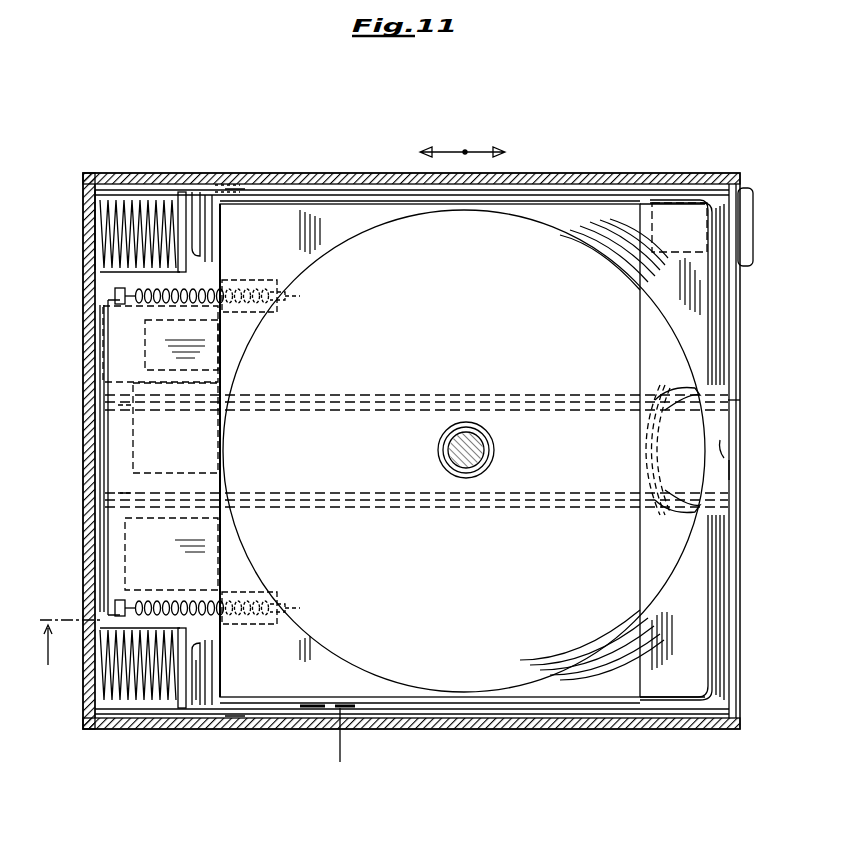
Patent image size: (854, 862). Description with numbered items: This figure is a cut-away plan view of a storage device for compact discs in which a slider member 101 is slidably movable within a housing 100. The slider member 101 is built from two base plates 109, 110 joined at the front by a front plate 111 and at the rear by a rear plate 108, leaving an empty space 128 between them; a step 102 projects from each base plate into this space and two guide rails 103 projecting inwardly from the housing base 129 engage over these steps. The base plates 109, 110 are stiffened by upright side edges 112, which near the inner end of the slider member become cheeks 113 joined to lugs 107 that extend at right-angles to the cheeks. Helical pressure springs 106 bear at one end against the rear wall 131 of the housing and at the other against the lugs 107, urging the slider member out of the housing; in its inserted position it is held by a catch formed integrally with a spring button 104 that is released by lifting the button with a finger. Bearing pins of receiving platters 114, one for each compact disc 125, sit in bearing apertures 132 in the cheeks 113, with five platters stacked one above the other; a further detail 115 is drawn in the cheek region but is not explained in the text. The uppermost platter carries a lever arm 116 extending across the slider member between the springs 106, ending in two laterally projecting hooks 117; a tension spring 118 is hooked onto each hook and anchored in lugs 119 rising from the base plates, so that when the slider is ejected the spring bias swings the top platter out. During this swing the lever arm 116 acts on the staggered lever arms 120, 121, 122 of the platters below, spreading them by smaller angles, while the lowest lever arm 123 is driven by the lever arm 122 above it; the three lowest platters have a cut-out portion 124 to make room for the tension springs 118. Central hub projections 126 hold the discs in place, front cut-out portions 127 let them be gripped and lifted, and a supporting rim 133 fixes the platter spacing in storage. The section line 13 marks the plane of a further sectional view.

The section line 13- 13 is at (196, 677).
The housing 100 is at (280, 183).
The slider member 101 is at (742, 596).
The step 102 is at (712, 408).
The guide rails 103 is at (580, 410).
The spring button 104 is at (745, 232).
The helical pressure springs 106 is at (130, 200).
The lugs 107 is at (186, 258).
The rear plate 108 is at (96, 470).
The base plate 109 is at (190, 200).
The base plate 110 is at (200, 714).
The front plate 111 is at (730, 470).
The upright side edges 112 is at (337, 192).
The cheeks 113 is at (207, 198).
The receiving platters 114 is at (614, 212).
The latch pin 115 is at (218, 186).
The lever arm 116 is at (106, 385).
The hooks 117 is at (114, 296).
The tension springs 118 is at (270, 280).
The lugs 119 is at (300, 296).
The lever arm 120 is at (124, 555).
The lever arm 121 is at (132, 442).
The lever arm 122 is at (130, 356).
The lever arm 123 is at (152, 340).
The cut-out portion 124 is at (265, 306).
The compact disc 125 is at (478, 612).
The central hub projections 126 is at (467, 480).
The front cut-out portions 127 is at (648, 388).
The empty space 128 is at (730, 432).
The housing base 129 is at (724, 444).
The rear wall 131 is at (92, 217).
The bearing apertures 132 is at (232, 188).
The supporting rim 133 is at (222, 438).